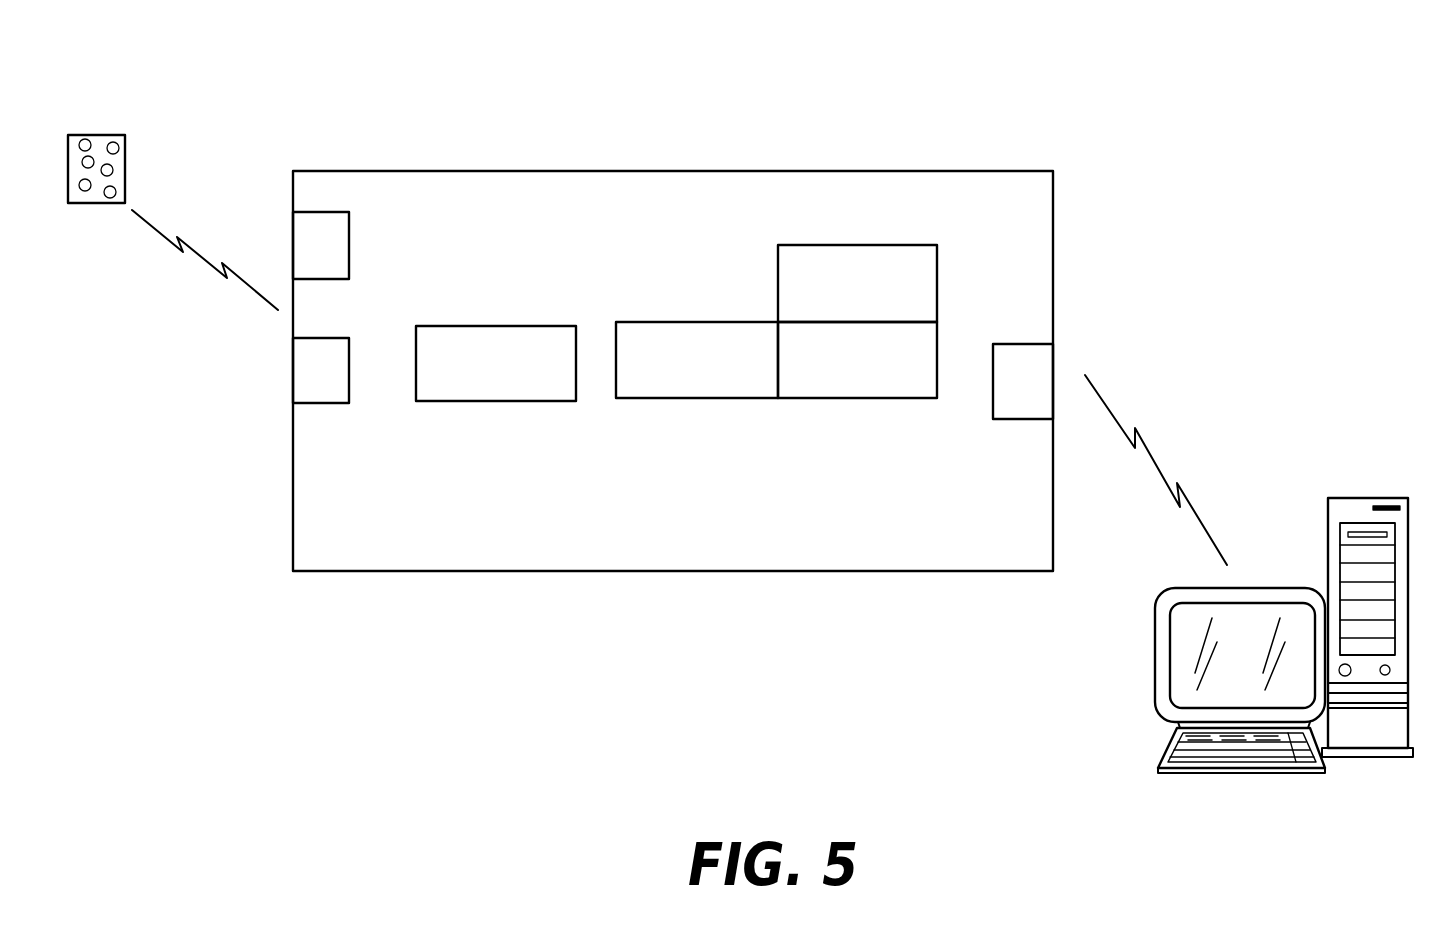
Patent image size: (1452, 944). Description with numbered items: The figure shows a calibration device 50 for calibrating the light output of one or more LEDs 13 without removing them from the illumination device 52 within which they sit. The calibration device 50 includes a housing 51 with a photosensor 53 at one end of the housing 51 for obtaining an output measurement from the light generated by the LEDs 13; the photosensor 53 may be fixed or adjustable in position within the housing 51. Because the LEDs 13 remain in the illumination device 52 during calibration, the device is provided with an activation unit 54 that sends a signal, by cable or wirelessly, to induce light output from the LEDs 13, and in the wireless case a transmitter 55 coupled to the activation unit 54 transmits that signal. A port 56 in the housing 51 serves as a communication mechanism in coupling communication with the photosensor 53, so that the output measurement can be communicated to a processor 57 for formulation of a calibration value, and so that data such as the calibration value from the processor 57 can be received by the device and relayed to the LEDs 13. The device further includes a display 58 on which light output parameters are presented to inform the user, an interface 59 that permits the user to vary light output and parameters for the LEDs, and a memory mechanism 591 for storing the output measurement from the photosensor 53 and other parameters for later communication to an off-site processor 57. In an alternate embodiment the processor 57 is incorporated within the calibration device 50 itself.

The LEDs 13 is at (86, 139).
The calibration device 50 is at (1097, 150).
The housing 51 is at (680, 170).
The illumination device 52 is at (136, 119).
The photosensor 53 is at (310, 372).
The activation unit 54 is at (688, 322).
The transmitter 55 is at (313, 238).
The port 56 is at (1008, 344).
The processor 57 is at (1328, 500).
The display 58 is at (808, 245).
The interface 59 is at (828, 398).
The memory mechanism 591 is at (540, 325).